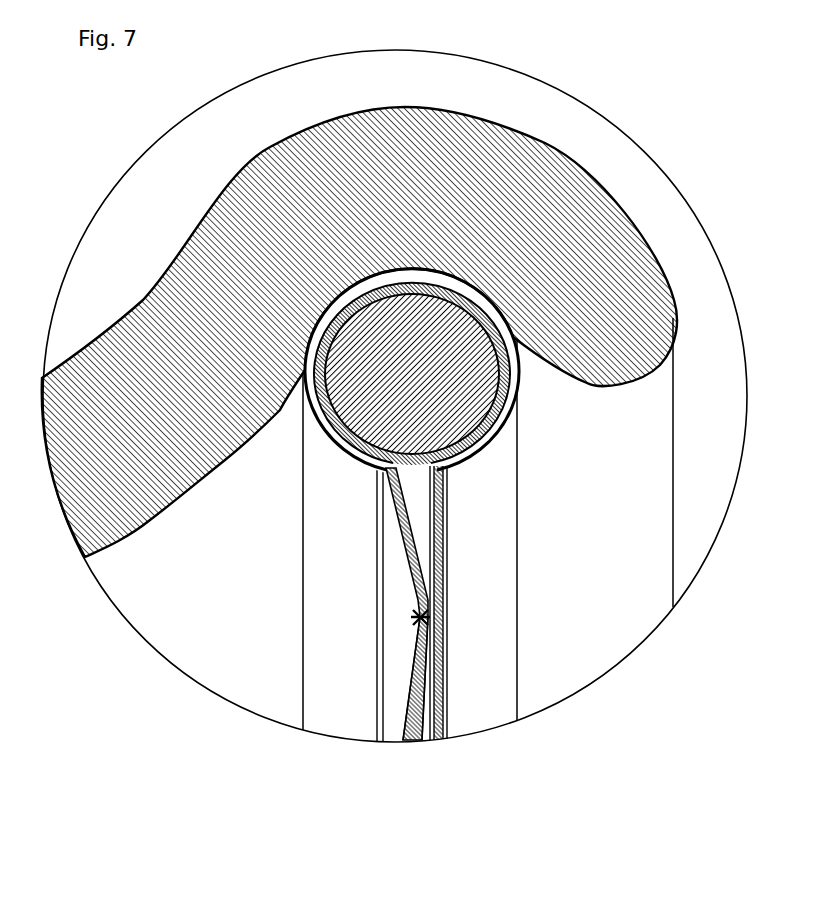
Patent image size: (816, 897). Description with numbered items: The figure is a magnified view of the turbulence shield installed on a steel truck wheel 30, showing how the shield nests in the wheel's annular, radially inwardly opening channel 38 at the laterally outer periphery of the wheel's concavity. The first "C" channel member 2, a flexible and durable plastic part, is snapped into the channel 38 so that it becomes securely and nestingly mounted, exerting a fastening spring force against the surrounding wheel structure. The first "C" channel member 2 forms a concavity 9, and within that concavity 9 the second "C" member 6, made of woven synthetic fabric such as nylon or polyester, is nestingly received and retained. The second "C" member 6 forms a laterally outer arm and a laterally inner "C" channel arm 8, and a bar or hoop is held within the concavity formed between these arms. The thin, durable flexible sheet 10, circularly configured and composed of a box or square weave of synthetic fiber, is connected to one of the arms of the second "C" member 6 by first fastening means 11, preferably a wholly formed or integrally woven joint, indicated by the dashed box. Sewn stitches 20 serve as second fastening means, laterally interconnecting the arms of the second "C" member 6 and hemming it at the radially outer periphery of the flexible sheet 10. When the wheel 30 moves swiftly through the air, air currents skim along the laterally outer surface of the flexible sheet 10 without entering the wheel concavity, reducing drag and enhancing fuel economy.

The first "C" channel member 2 is at (500, 320).
The second "C" member 6 is at (422, 290).
The laterally inner "C" channel arm 8 is at (405, 540).
The concavity 9 is at (413, 463).
The flexible sheet 10 is at (427, 722).
The first fastening means 11 is at (433, 660).
The sewn stitches 20 is at (415, 620).
The steel truck wheel 30 is at (87, 488).
The annular radially inwardly opening channel 38 is at (349, 287).